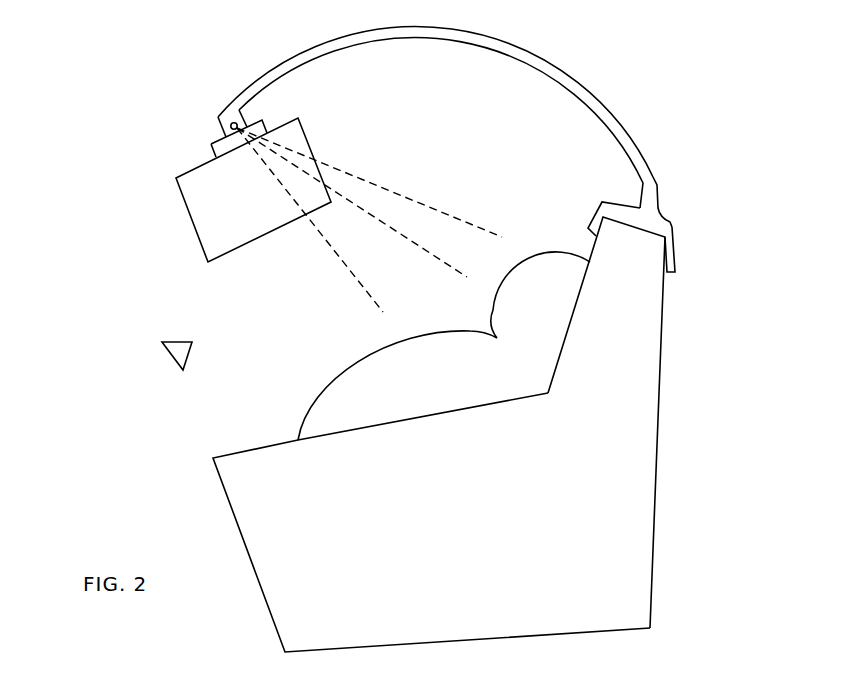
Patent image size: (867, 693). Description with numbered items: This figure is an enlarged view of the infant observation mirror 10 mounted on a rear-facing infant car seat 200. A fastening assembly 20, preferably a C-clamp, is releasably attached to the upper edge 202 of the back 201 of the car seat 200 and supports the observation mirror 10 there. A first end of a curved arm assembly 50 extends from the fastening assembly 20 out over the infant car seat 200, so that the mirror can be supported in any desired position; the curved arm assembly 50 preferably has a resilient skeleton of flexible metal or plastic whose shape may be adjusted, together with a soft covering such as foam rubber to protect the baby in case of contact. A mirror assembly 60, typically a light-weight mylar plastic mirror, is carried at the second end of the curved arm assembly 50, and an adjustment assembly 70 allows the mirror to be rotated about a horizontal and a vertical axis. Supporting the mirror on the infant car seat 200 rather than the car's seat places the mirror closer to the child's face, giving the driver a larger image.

The infant observation mirror 10 is at (172, 355).
The fastening assembly 20 is at (588, 200).
The curved arm assembly 50 is at (585, 75).
The mirror assembly 60 is at (158, 200).
The adjustment assembly 70 is at (193, 138).
The rear-facing infant car seat 200 is at (467, 455).
The back 201 is at (625, 308).
The upper edge 202 is at (637, 227).